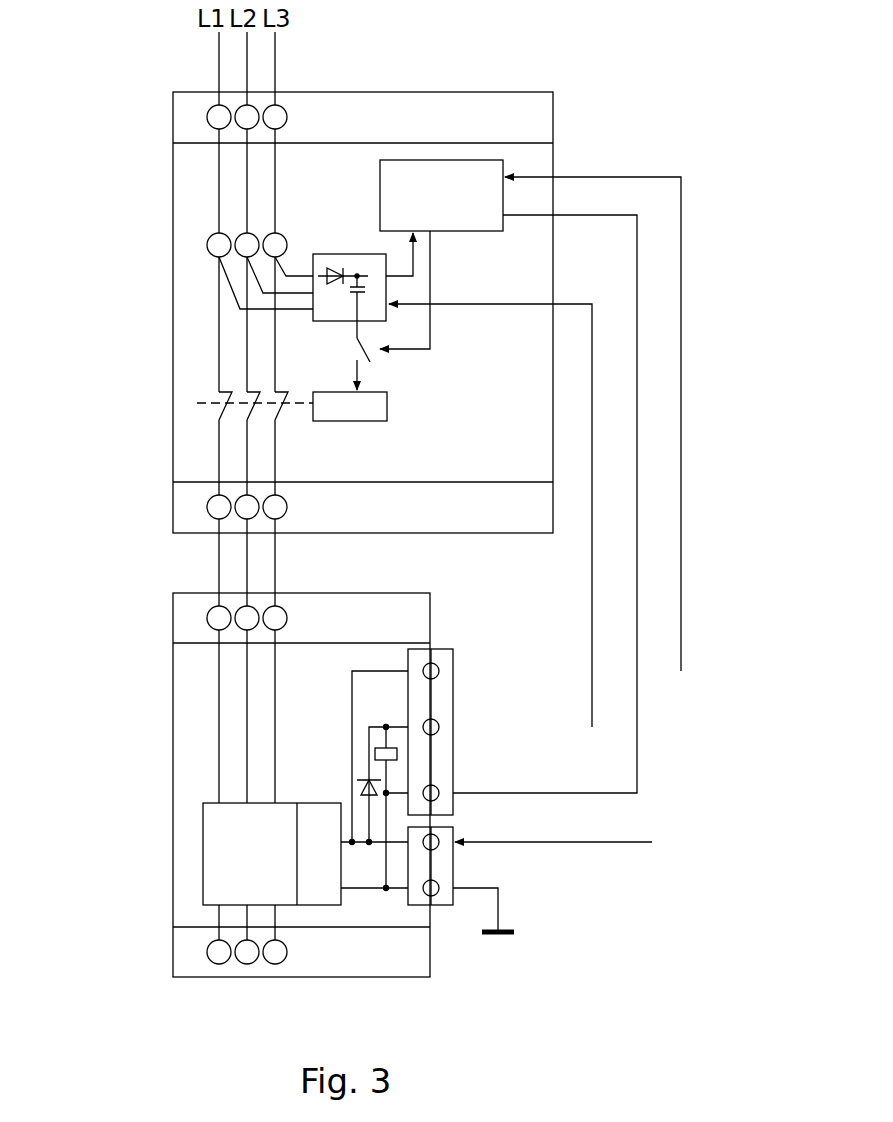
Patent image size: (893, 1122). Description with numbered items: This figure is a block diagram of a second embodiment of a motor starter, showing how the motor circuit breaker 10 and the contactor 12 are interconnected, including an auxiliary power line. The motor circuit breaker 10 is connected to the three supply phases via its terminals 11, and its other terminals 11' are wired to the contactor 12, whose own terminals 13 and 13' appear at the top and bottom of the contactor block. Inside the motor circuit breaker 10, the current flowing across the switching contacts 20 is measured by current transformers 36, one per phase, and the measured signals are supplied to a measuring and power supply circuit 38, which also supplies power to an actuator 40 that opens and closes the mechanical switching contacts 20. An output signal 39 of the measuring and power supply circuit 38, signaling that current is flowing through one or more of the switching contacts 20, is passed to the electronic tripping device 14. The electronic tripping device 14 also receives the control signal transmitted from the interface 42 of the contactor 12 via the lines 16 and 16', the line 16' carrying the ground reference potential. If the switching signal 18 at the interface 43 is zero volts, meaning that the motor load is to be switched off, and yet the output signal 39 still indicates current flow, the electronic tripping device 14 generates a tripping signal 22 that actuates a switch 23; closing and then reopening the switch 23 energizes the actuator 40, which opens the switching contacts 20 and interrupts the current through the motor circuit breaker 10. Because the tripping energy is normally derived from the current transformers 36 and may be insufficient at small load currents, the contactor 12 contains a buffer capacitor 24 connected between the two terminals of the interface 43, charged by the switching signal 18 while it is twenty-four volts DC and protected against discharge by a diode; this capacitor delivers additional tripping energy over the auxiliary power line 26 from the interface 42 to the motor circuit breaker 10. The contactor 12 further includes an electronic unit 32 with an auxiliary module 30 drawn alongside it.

The motor circuit breaker 10 is at (140, 343).
The terminals 11 is at (331, 130).
The terminals 11' is at (326, 513).
The contactor 12 is at (148, 735).
The input terminals of second device 13 is at (266, 626).
The output terminals of second device 13' is at (266, 954).
The electronic tripping device 14 is at (388, 190).
The line 16 is at (606, 504).
The line 16' is at (635, 424).
The switching signal 18 is at (604, 845).
The switching contacts 20 is at (195, 413).
The tripping signal 22 is at (432, 334).
The switch 23 is at (383, 360).
The buffer capacitor 24 is at (397, 755).
The auxiliary power line 26 is at (592, 598).
The auxiliary module 30 is at (315, 815).
The electronic unit 32 is at (215, 850).
The current transformers 36 is at (205, 245).
The measuring and power supply circuit 38 is at (323, 314).
The output signal 39 is at (405, 255).
The actuator 40 is at (350, 415).
The interface 42 is at (443, 698).
The interface 43 is at (443, 866).